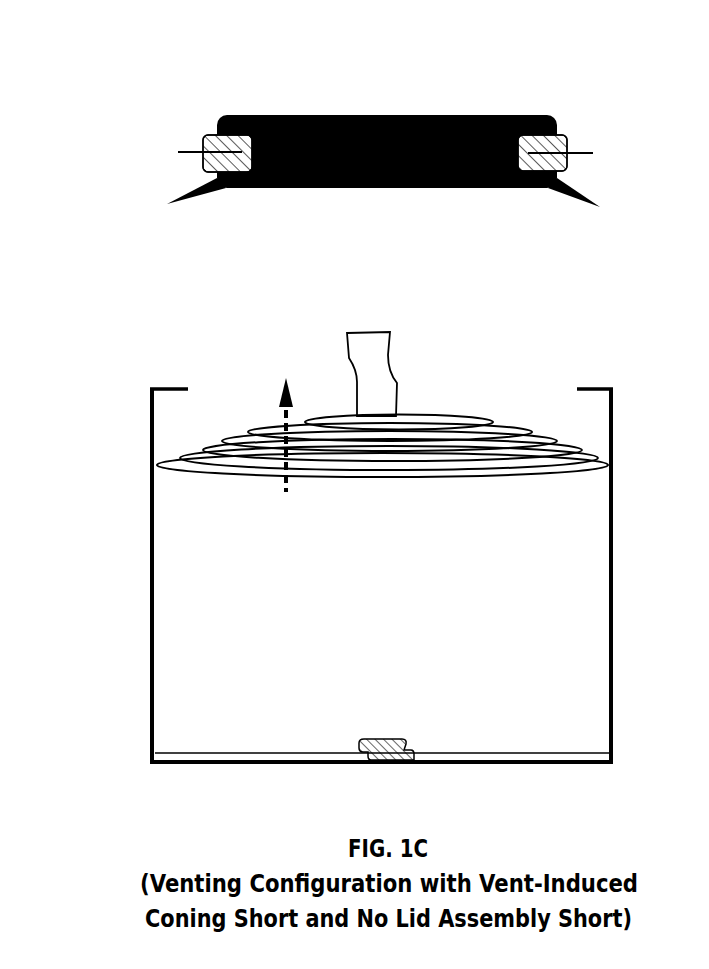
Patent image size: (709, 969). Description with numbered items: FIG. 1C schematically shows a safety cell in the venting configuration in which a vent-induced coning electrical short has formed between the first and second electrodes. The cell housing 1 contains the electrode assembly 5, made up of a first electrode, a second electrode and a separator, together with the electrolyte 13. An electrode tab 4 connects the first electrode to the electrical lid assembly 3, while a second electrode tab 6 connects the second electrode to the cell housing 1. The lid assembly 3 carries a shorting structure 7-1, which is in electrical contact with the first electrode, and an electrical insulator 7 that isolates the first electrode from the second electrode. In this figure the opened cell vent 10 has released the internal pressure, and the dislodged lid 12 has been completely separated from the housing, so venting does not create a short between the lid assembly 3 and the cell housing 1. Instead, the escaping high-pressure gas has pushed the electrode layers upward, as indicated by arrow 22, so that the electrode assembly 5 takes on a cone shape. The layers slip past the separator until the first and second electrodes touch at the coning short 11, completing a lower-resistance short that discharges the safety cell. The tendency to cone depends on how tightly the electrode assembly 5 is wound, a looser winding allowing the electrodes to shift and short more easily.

The cell housing 1 is at (150, 490).
The electrical lid assembly 3 is at (243, 117).
The electrode tab 4 is at (366, 343).
The electrode assembly 5 is at (195, 622).
The electrode tab 6 is at (368, 758).
The electrical insulator 7 is at (570, 143).
The shorting structure 7-1 is at (573, 198).
The cell vent (after cell vent) 10 is at (165, 389).
The coning short in venting configuration 11 is at (488, 418).
The dislodged lid from cell in electrically shorting configuration after vent 12 is at (437, 115).
The electrolyte 13 is at (272, 672).
The electrode assembly movement during venting configuration 22 is at (287, 467).